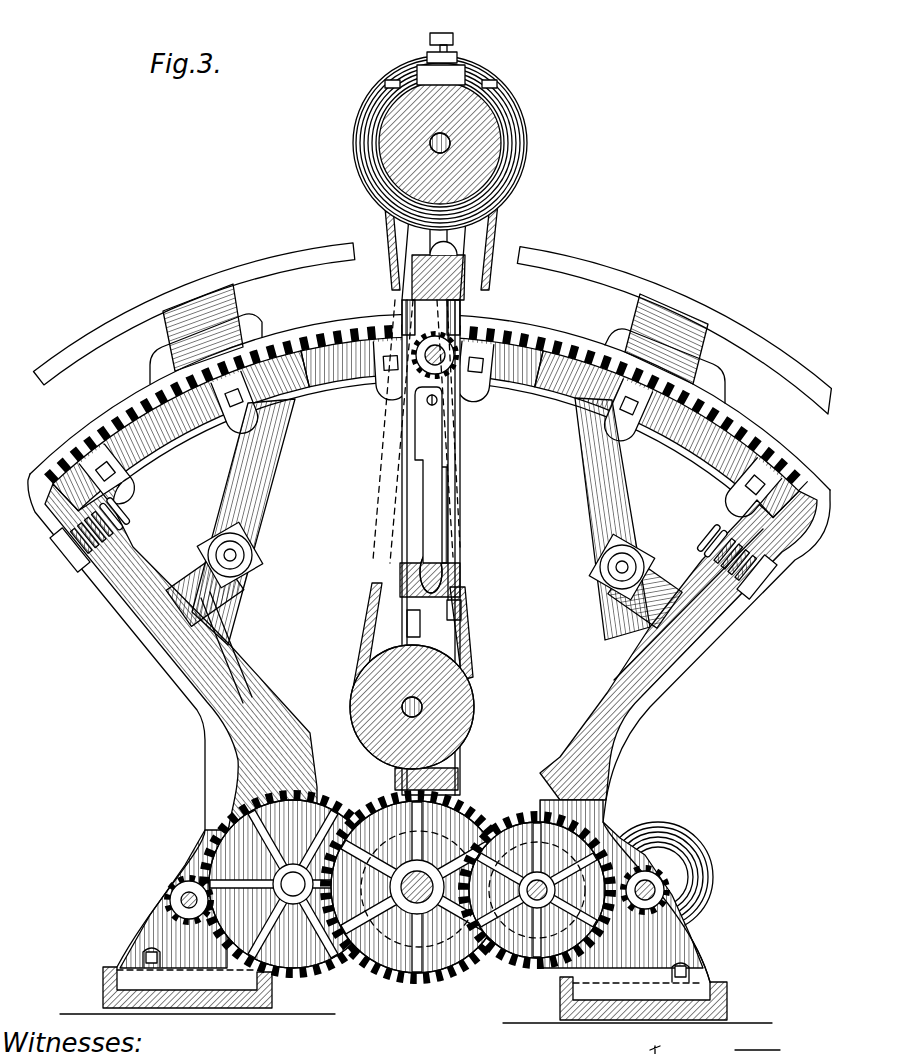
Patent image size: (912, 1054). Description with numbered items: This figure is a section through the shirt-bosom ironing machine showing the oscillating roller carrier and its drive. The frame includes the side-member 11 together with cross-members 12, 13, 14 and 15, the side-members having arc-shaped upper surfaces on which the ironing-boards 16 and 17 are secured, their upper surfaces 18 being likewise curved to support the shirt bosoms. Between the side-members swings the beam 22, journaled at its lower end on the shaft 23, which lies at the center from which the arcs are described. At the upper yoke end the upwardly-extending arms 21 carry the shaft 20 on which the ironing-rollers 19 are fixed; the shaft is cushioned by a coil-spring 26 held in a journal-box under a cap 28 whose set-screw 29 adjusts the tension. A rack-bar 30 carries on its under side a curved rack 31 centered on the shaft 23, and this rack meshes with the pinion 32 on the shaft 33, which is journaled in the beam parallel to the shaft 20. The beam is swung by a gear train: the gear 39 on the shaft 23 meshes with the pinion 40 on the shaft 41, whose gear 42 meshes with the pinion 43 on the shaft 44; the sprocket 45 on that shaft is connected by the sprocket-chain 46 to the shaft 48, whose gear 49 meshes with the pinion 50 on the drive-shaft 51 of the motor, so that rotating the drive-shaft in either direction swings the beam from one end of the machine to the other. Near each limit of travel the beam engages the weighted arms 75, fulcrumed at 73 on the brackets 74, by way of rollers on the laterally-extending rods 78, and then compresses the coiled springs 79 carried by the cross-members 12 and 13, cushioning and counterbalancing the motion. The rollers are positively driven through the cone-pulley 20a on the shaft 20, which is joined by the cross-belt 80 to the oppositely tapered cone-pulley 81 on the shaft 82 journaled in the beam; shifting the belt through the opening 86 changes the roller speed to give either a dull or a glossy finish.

The side-member 11 is at (182, 657).
The cross-member 12 is at (88, 583).
The cross-member 13 is at (750, 594).
The cross-member 14 is at (250, 997).
The cross-member 15 is at (632, 1010).
The ironing-board 16 is at (160, 293).
The ironing-board 17 is at (617, 270).
The arc-shaped upper surface 18 is at (236, 263).
The ironing-roller 19 is at (518, 108).
The shaft 20 is at (453, 143).
The cone-pulley 20a is at (407, 138).
The upwardly-extending arm 21 is at (455, 253).
The beam 22 is at (452, 515).
The shaft 23 is at (410, 902).
The coil-spring 26 is at (387, 82).
The cap 28 is at (456, 72).
The set-screw 29 is at (448, 34).
The rack-bar 30 is at (117, 403).
The curved rack 31 is at (198, 420).
The pinion 32 is at (407, 392).
The shaft 33 is at (432, 364).
The gear 39 is at (423, 968).
The pinion 40 is at (543, 960).
The shaft 41 is at (523, 812).
The gear 42 is at (523, 957).
The pinion 43 is at (657, 870).
The shaft 44 is at (658, 897).
The sprocket 45 is at (693, 883).
The sprocket-chain 46 is at (643, 823).
The shaft 48 is at (298, 890).
The gear 49 is at (328, 783).
The pinion 50 is at (180, 877).
The drive-shaft 51 is at (182, 898).
The fulcrum 73 is at (232, 557).
The bracket 74 is at (195, 570).
The arm 75 is at (234, 612).
The rod 78 is at (437, 400).
The coiled spring 79 is at (141, 519).
The cross-belt 80 is at (489, 179).
The cone-pulley 81 is at (450, 725).
The shaft 82 is at (403, 707).
The opening 86 is at (438, 433).